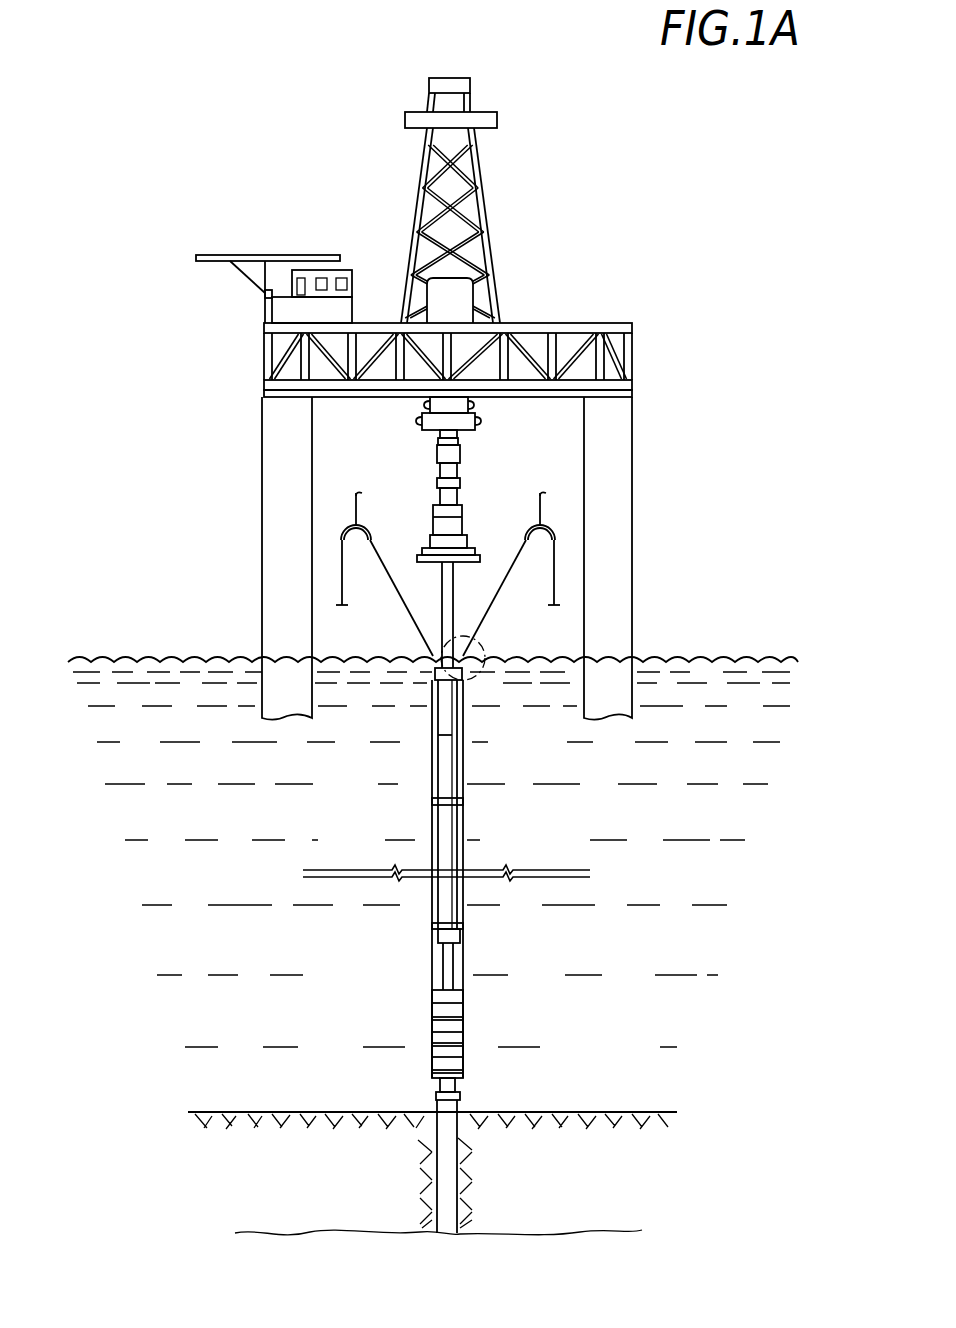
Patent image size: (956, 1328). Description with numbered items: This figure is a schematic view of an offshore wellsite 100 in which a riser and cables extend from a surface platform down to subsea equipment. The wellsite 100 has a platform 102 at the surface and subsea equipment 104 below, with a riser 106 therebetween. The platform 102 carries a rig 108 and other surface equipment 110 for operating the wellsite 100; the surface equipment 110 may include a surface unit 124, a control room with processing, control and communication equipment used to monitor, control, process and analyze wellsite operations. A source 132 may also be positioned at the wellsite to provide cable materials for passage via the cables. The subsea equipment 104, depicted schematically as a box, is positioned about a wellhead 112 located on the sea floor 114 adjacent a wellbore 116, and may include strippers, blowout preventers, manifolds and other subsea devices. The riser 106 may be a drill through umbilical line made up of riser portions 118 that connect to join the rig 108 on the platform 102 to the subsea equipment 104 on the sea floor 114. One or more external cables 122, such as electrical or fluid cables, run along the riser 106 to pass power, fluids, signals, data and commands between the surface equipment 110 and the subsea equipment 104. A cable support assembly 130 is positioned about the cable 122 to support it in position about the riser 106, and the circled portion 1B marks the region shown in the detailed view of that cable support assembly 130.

The wellsite 100 is at (270, 150).
The platform 102 is at (608, 323).
The subsea equipment 104 is at (440, 995).
The riser 106 is at (447, 826).
The rig 108 is at (472, 84).
The surface equipment 110 is at (230, 265).
The wellhead 112 is at (435, 1093).
The sea floor 114 is at (591, 1112).
The wellbore 116 is at (457, 1177).
The riser portions 118 is at (445, 716).
The external cables 122 is at (465, 853).
The surface unit 124 is at (340, 257).
The cable support assembly 130 is at (463, 672).
The source 132 is at (457, 297).
The portion 1B is at (488, 654).